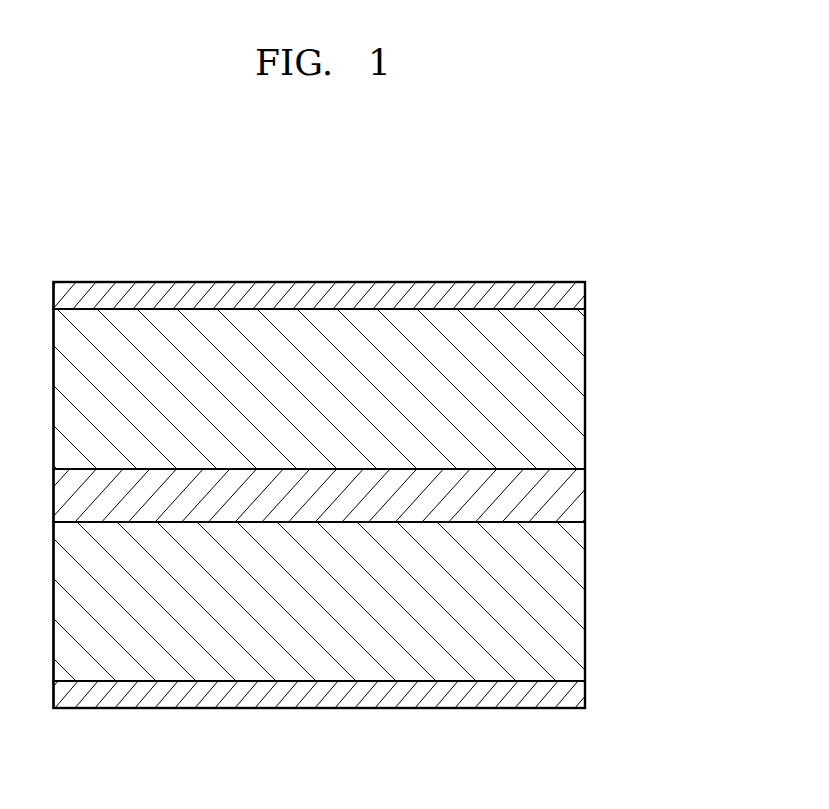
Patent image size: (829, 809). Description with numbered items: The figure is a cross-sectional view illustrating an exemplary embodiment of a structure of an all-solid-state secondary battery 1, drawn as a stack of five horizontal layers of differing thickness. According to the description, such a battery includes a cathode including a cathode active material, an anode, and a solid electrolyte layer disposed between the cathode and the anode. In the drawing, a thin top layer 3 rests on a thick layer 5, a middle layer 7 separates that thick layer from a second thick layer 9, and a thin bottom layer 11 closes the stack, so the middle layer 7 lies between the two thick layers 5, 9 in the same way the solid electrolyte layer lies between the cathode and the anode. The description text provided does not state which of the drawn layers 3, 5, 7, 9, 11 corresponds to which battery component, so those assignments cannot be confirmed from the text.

The laminate 1 is at (591, 228).
The first outer layer 3 is at (585, 297).
The first core layer 5 is at (585, 390).
The intermediate layer 7 is at (585, 496).
The second core layer 9 is at (585, 603).
The second outer layer 11 is at (585, 695).